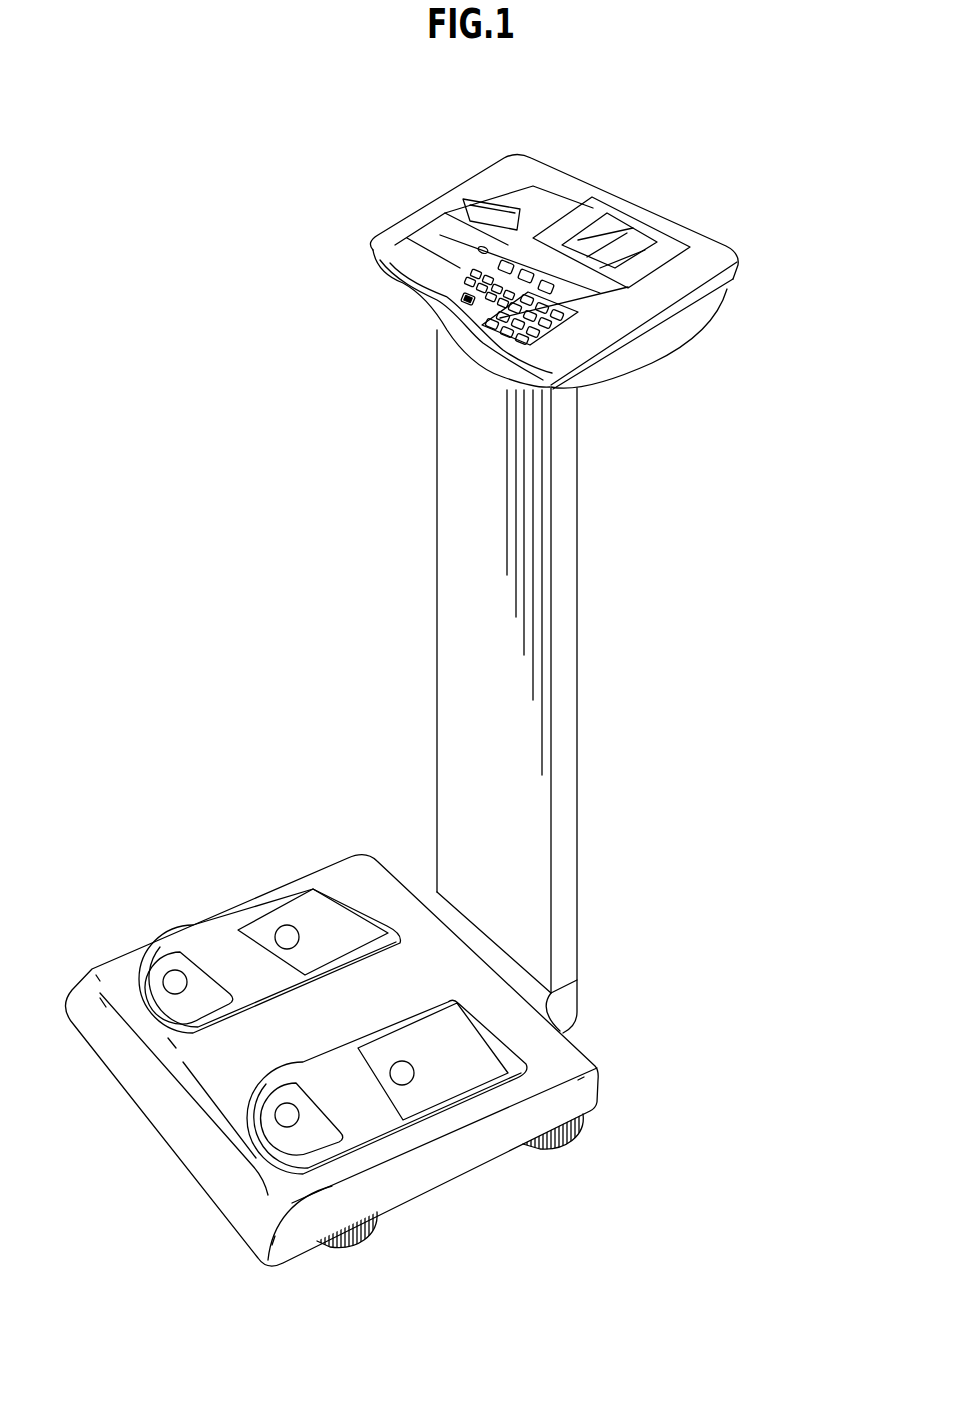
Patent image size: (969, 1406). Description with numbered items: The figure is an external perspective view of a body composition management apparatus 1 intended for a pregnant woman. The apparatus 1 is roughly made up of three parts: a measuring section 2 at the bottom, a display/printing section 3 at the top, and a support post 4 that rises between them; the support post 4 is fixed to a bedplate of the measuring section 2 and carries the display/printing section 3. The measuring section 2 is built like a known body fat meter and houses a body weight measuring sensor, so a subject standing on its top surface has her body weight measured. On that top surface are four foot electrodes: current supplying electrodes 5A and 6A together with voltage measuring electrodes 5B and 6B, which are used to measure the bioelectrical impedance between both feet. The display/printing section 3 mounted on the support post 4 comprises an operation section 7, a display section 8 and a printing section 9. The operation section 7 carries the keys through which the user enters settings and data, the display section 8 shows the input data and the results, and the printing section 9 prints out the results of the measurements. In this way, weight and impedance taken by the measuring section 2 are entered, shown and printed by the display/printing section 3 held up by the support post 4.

The body composition management apparatus 1 is at (452, 709).
The measuring section 2 is at (392, 1074).
The display/printing section 3 is at (579, 238).
The support post 4 is at (523, 815).
The current supplying electrode 5A is at (287, 917).
The voltage measuring electrode 5B is at (162, 980).
The current supplying electrode 6A is at (445, 1068).
The voltage measuring electrode 6B is at (298, 1133).
The operation section 7 is at (465, 310).
The display section 8 is at (615, 228).
The printing section 9 is at (502, 198).